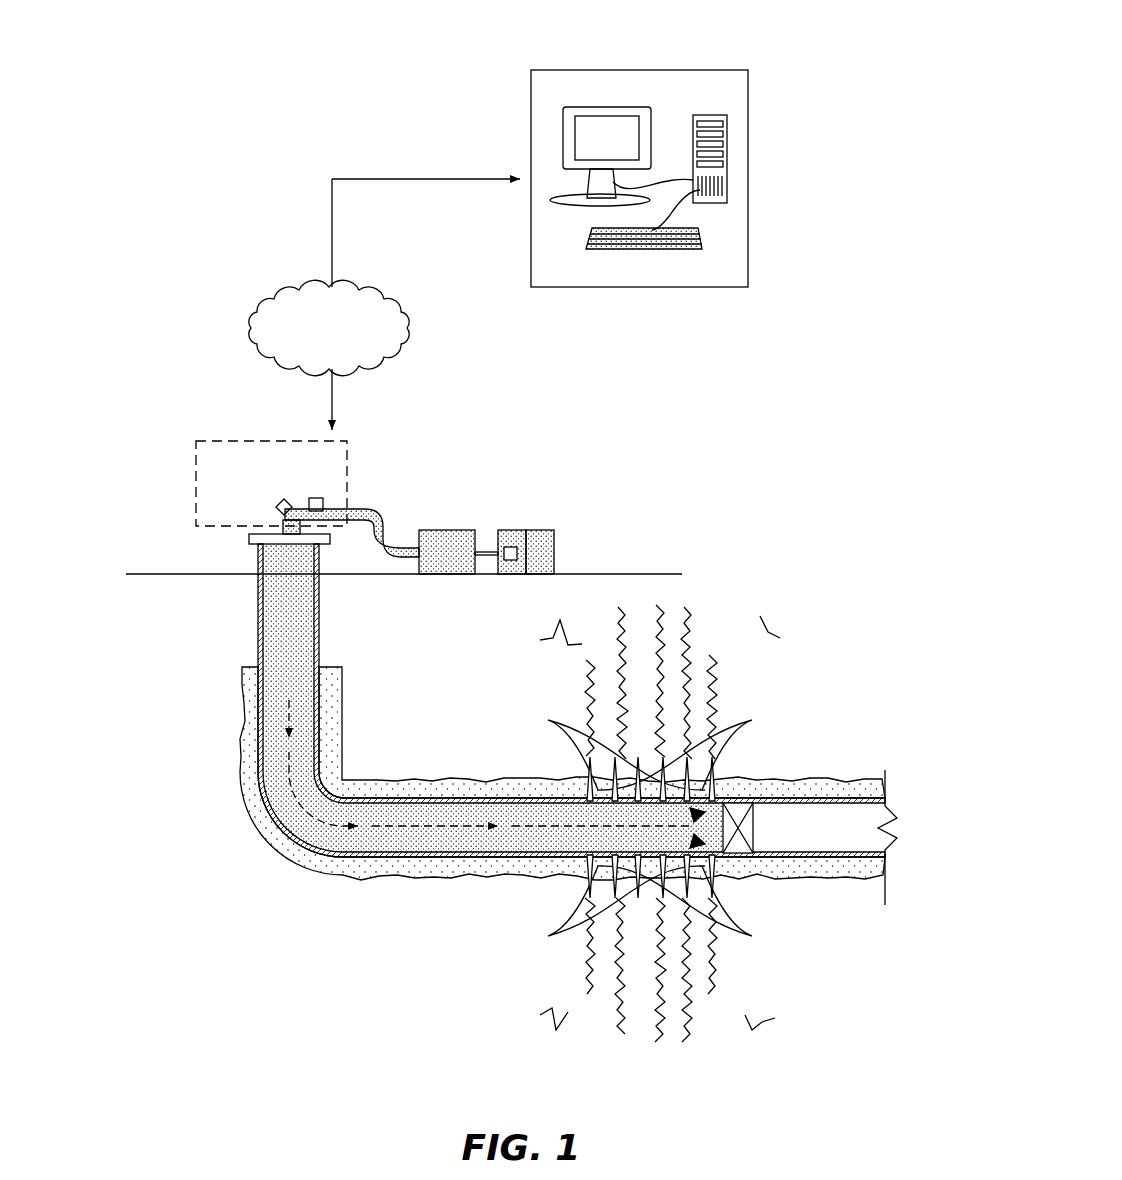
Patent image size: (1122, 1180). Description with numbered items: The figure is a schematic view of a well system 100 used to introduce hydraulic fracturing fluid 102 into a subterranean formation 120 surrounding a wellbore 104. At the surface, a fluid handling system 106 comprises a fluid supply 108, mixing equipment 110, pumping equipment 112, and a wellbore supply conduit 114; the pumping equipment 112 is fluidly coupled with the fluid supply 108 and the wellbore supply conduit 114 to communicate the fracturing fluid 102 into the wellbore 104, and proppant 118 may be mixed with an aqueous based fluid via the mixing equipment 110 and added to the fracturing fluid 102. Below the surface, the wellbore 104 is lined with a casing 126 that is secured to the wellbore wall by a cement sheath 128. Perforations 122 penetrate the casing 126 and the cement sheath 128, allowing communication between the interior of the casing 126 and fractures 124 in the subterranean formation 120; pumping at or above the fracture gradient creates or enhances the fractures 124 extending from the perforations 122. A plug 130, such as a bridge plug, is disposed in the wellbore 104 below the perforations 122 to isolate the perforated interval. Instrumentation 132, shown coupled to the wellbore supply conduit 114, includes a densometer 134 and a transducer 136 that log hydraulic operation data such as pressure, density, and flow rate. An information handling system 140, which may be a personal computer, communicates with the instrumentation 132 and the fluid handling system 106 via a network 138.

The well system 100 is at (188, 545).
The hydraulic fracturing fluid 102 is at (318, 818).
The wellbore 104 is at (340, 707).
The fluid handling system 106 is at (514, 499).
The fluid supply 108 is at (550, 530).
The mixing equipment 110 is at (520, 530).
The pumping equipment 112 is at (447, 530).
The wellbore supply conduit 114 is at (356, 508).
The proppant 118 is at (510, 548).
The subterranean formation 120 is at (377, 635).
The perforations 122 is at (651, 830).
The fractures 124 is at (735, 965).
The casing 126 is at (433, 800).
The cement sheath 128 is at (485, 790).
The plug 130 is at (752, 812).
The instrumentation 132 is at (240, 474).
The densometer 134 is at (276, 505).
The transducer 136 is at (314, 498).
The network 138 is at (293, 289).
The information handling system 140 is at (740, 48).